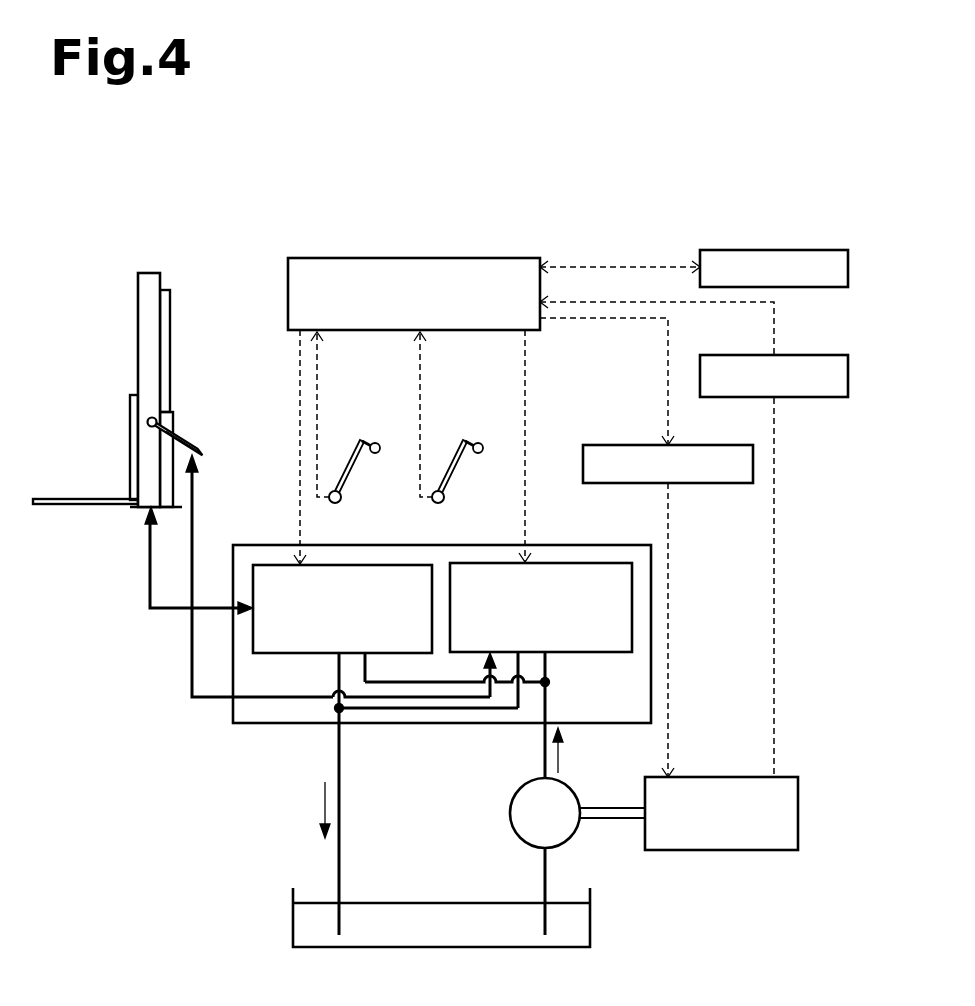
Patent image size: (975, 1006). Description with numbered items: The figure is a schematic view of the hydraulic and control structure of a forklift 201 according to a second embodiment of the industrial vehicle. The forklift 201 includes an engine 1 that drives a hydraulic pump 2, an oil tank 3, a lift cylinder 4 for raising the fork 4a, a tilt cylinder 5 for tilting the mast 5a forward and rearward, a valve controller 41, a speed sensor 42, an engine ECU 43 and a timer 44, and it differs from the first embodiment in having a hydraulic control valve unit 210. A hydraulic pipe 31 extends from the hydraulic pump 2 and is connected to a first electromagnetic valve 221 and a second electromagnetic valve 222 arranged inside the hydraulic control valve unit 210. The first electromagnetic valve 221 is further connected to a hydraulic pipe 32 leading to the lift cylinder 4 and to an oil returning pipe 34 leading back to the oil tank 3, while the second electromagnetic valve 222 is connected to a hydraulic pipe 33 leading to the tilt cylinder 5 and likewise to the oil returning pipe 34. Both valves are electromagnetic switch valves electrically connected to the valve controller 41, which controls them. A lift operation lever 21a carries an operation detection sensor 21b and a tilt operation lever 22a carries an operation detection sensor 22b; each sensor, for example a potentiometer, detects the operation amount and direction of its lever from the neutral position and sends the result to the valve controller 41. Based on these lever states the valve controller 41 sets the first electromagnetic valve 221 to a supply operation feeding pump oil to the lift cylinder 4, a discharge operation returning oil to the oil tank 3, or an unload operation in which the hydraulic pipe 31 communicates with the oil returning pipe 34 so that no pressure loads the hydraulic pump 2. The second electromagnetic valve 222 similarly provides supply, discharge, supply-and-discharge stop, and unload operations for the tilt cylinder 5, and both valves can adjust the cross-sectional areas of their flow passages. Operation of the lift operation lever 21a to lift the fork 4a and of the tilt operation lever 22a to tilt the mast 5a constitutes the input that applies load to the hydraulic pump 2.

The engine 1 is at (800, 812).
The hydraulic pump 2 is at (510, 800).
The oil tank 3 is at (592, 920).
The lift cylinder 4 is at (167, 372).
The fork 4a is at (100, 500).
The tilt cylinder 5 is at (193, 438).
The mast 5a is at (138, 312).
The lift operation lever 21a is at (358, 440).
The operation detection sensor 21b is at (342, 503).
The tilt operation lever 22a is at (461, 440).
The operation detection sensor 22b is at (445, 503).
The hydraulic pipe 31 is at (545, 750).
The hydraulic pipe 32 is at (148, 590).
The hydraulic pipe 33 is at (191, 550).
The oil returning pipe 34 is at (339, 855).
The valve controller 41 is at (288, 295).
The speed sensor 42 is at (823, 355).
The engine ECU 43 is at (755, 462).
The timer 44 is at (823, 250).
The forklift 201 is at (535, 485).
The hydraulic control valve unit 210 is at (442, 607).
The first electromagnetic valve 221 is at (313, 655).
The second electromagnetic valve 222 is at (587, 653).